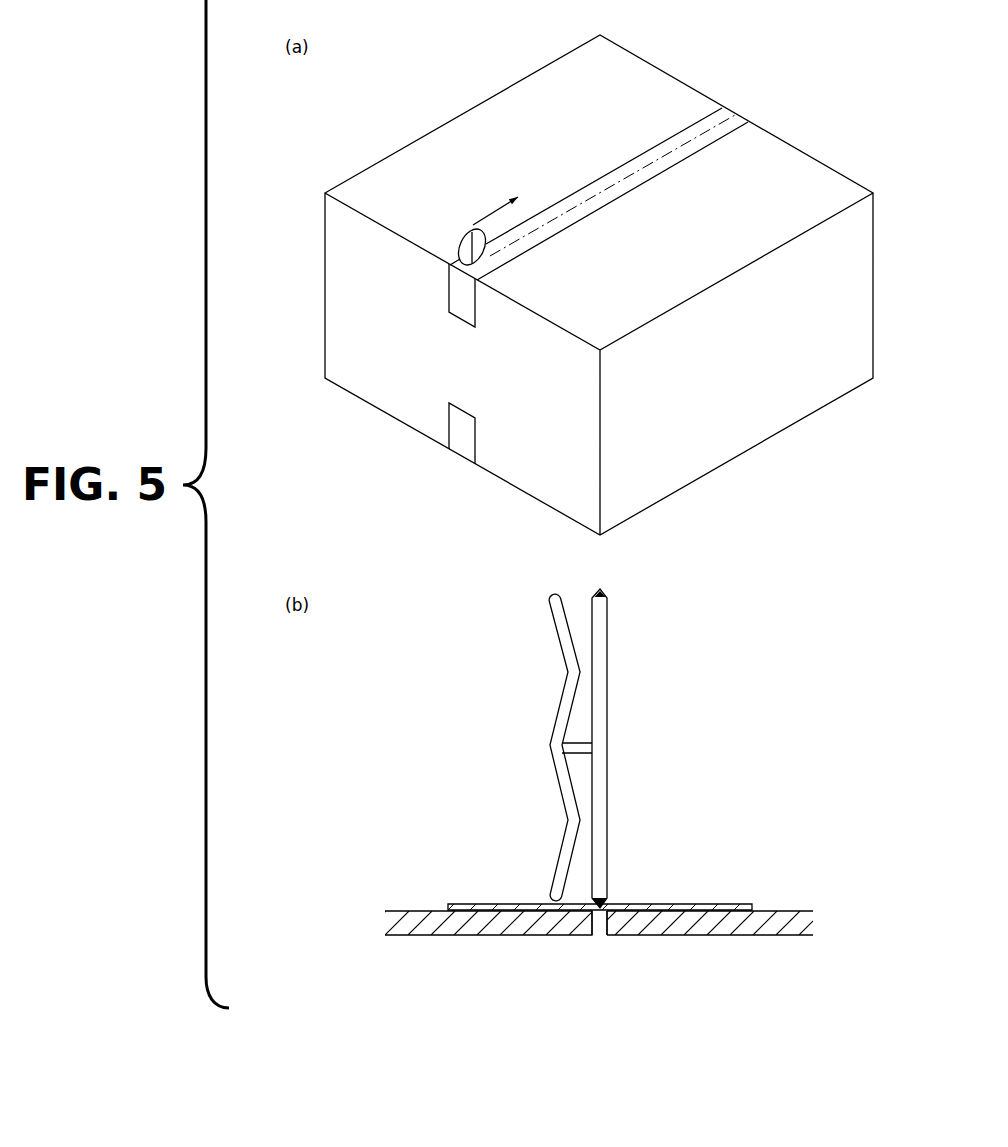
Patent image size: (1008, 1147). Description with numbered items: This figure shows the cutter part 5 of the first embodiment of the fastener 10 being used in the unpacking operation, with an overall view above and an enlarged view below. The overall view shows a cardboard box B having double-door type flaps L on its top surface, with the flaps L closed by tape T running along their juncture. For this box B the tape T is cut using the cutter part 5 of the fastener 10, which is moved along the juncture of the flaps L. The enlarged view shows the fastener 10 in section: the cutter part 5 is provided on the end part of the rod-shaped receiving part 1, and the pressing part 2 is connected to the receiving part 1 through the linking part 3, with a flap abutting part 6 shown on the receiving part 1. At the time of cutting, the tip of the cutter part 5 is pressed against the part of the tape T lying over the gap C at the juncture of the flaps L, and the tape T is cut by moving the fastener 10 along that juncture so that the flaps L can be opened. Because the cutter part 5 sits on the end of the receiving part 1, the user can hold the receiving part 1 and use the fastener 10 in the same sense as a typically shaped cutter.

The receiving part 1 is at (607, 705).
The pressing part 2 is at (565, 702).
The linking part 3 is at (578, 752).
The cutter part 5 is at (473, 262).
The flap abutting part 6 is at (600, 662).
The fastener 10 is at (452, 233).
The box B is at (390, 130).
The flaps L is at (395, 862).
The tape T is at (725, 907).
The gap C is at (598, 937).